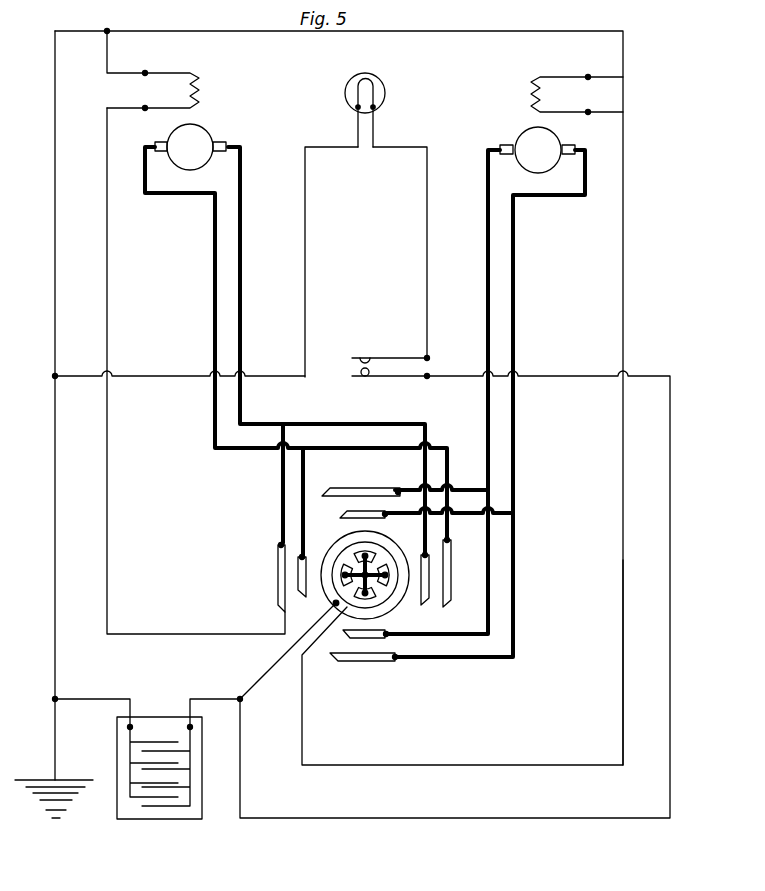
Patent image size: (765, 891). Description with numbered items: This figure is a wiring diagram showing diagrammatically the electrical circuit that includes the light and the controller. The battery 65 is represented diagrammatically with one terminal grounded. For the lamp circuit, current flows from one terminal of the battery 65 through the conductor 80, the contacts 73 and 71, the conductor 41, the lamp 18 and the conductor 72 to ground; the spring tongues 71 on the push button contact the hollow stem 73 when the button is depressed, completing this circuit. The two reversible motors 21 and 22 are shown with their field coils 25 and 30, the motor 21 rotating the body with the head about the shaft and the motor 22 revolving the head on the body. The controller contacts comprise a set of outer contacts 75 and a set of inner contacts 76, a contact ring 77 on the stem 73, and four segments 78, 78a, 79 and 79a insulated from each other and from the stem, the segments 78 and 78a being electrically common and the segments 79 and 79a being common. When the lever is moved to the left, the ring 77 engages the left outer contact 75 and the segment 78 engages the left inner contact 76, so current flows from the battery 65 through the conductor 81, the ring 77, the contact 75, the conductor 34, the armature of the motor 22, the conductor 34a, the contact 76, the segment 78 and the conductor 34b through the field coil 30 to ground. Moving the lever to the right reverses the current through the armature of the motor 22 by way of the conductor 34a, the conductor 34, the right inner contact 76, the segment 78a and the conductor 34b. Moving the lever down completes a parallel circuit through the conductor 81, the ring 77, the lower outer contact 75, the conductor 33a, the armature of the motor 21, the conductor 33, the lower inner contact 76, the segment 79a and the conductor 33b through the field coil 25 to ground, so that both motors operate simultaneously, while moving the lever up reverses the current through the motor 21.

The lamp 18 is at (382, 97).
The motor 21 is at (551, 147).
The motor 22 is at (212, 136).
The field coil 25 is at (538, 79).
The field coil 30 is at (200, 76).
The conductor 33 is at (486, 335).
The conductor 33a is at (514, 305).
The conductor 33b is at (622, 588).
The conductor 34 is at (243, 302).
The conductor 34a is at (213, 320).
The conductor 34b is at (107, 535).
The conductor 41 is at (428, 295).
The battery 65 is at (122, 806).
The spring tongues 71 is at (370, 357).
The wire 72 is at (306, 280).
The hollow stem 73 is at (366, 377).
The outer contacts 75 is at (352, 490).
The inner contacts 76 is at (345, 514).
The contact ring 77 is at (393, 550).
The segment 78 is at (350, 566).
The segment 78a is at (385, 587).
The segment 79 is at (369, 556).
The segment 79a is at (372, 598).
The conductor 80 is at (382, 820).
The conductor 81 is at (258, 680).